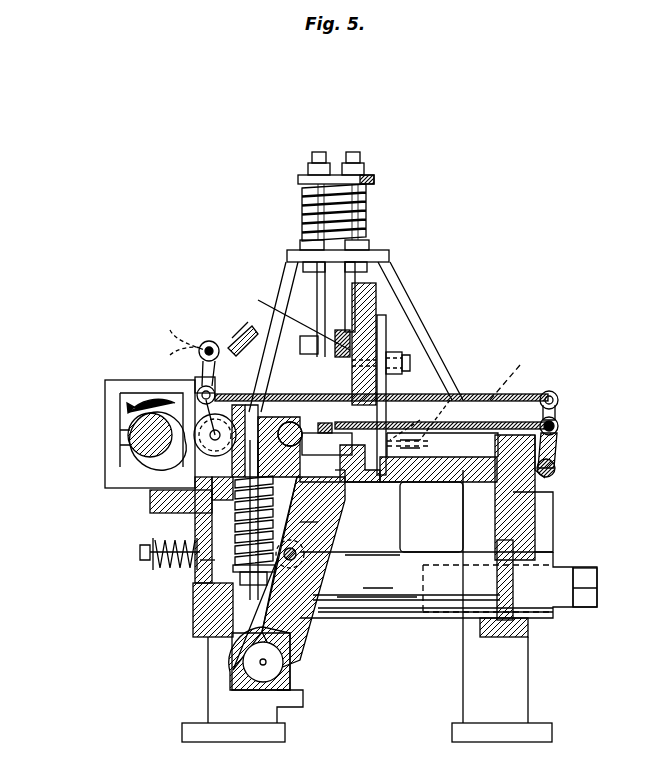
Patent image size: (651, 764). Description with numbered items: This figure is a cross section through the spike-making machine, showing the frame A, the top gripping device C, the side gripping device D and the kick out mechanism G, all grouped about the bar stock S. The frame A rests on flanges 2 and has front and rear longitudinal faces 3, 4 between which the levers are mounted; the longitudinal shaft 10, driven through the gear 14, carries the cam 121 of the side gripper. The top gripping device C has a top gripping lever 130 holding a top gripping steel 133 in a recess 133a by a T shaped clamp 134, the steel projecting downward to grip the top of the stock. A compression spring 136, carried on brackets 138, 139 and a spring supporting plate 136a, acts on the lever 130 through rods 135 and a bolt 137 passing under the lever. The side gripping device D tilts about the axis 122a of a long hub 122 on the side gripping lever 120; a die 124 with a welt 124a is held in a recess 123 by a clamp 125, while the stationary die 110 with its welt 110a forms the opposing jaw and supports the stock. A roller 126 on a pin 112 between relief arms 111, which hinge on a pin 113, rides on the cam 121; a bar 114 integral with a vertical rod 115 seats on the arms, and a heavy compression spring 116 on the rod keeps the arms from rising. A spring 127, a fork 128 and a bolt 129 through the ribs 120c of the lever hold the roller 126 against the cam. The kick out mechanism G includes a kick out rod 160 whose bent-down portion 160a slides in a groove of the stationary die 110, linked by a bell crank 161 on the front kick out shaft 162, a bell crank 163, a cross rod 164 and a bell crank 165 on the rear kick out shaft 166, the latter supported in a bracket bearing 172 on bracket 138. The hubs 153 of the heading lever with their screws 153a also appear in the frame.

The flanges 2 is at (285, 736).
The front longitudinal face 3 is at (530, 525).
The rear longitudinal face 4 is at (205, 585).
The longitudinal shaft 10 is at (135, 440).
The gear 14 is at (400, 527).
The stationary die 110 is at (480, 403).
The welt 110a is at (450, 398).
The relief arms 111 is at (198, 348).
The pin 112 is at (210, 420).
The pin 113 is at (310, 410).
The bar 114 is at (252, 403).
The vertical spring rod 115 is at (200, 605).
The compression spring 116 is at (148, 553).
The side gripping lever 120 is at (305, 625).
The ribs 120c is at (318, 522).
The cam 121 is at (150, 480).
The hub 122 is at (284, 672).
The axis 122a is at (258, 662).
The recess 123 is at (335, 470).
The die 124 is at (395, 462).
The welt 124a is at (330, 420).
The clamp 125 is at (326, 457).
The roller 126 is at (185, 500).
The spring 127 is at (158, 570).
The fork 128 is at (235, 578).
The bolt 129 is at (298, 555).
The top gripping lever 130 is at (378, 290).
The top gripping steel 133 is at (392, 345).
The recess 133a is at (390, 335).
The T shaped clamp 134 is at (395, 365).
The rods 135 is at (345, 150).
The compression spring 136 is at (372, 205).
The spring supporting plate 136a is at (300, 250).
The bolt 137 is at (262, 305).
The bracket 138 is at (287, 257).
The bracket 139 is at (395, 262).
The hubs 153 is at (407, 625).
The screws 153a is at (586, 590).
The kick out rod 160 is at (520, 385).
The bent-down portion 160a is at (530, 355).
The bell crank 161 is at (556, 445).
The front kick out shaft 162 is at (555, 470).
The bell crank 163 is at (556, 420).
The cross rod 164 is at (553, 395).
The bell crank 165 is at (185, 348).
The rear kick out shaft 166 is at (207, 341).
The bracket bearing 172 is at (228, 348).
The frame A is at (540, 688).
The top gripping device C is at (392, 172).
The side gripping device D is at (315, 645).
The kick out mechanism G is at (560, 428).
The hot bar S is at (420, 462).